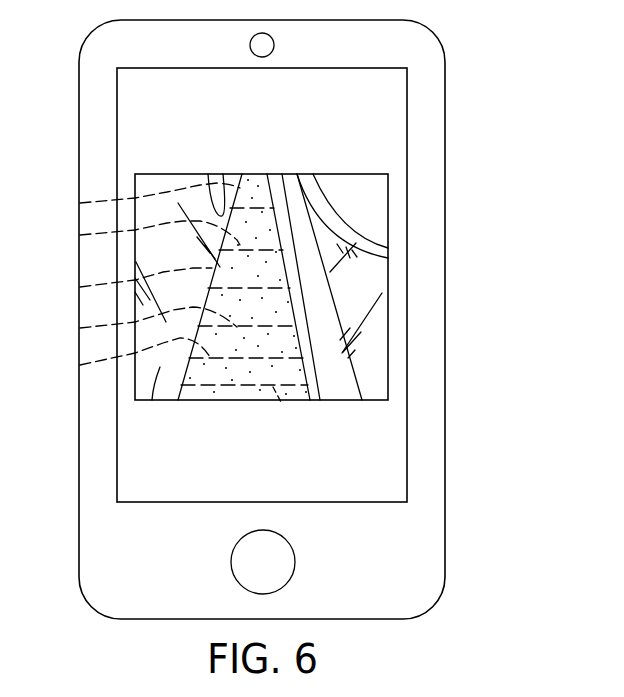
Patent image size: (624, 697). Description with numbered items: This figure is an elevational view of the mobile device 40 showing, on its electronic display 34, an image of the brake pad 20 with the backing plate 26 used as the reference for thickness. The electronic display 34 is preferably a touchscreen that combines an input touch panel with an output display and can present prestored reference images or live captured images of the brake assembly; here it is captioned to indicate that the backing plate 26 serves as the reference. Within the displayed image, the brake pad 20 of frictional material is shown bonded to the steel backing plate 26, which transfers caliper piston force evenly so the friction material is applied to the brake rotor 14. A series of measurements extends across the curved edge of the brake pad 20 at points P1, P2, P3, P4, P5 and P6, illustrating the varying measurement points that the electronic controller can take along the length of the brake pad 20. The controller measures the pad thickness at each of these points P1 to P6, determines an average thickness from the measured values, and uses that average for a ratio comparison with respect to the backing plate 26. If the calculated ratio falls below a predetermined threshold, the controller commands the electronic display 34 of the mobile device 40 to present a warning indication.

The mobile device 40 is at (489, 113).
The electronic display 34 is at (117, 455).
The brake rotor 14 is at (152, 400).
The first brake pad 20 is at (247, 347).
The backing plate 26 is at (335, 372).
The measurement point P1 is at (281, 402).
The measurement point P2 is at (80, 365).
The measurement point P3 is at (80, 328).
The measurement point P4 is at (80, 287).
The measurement point P5 is at (80, 235).
The measurement point P6 is at (80, 203).